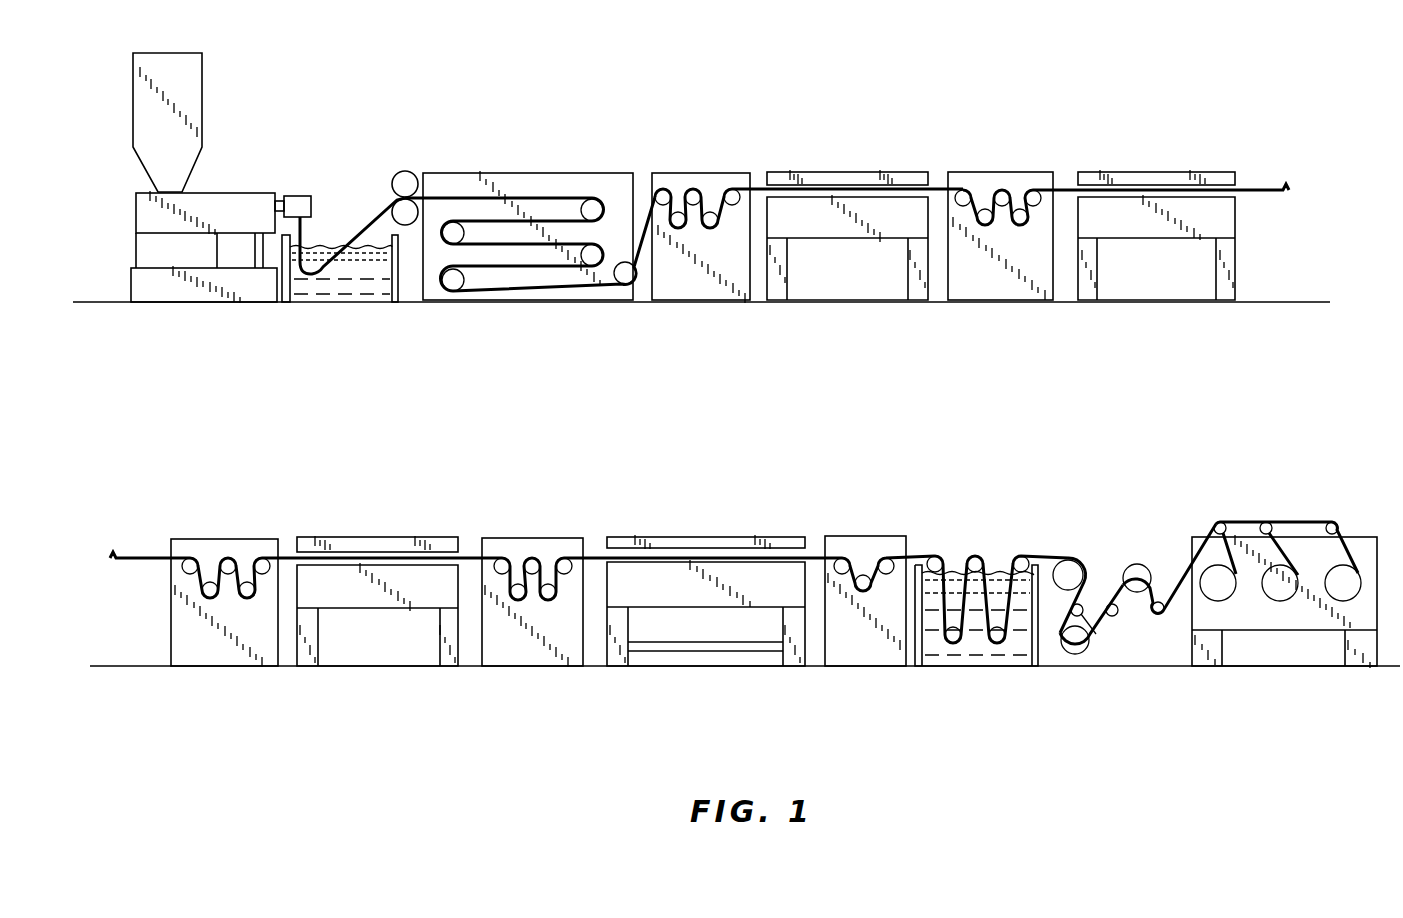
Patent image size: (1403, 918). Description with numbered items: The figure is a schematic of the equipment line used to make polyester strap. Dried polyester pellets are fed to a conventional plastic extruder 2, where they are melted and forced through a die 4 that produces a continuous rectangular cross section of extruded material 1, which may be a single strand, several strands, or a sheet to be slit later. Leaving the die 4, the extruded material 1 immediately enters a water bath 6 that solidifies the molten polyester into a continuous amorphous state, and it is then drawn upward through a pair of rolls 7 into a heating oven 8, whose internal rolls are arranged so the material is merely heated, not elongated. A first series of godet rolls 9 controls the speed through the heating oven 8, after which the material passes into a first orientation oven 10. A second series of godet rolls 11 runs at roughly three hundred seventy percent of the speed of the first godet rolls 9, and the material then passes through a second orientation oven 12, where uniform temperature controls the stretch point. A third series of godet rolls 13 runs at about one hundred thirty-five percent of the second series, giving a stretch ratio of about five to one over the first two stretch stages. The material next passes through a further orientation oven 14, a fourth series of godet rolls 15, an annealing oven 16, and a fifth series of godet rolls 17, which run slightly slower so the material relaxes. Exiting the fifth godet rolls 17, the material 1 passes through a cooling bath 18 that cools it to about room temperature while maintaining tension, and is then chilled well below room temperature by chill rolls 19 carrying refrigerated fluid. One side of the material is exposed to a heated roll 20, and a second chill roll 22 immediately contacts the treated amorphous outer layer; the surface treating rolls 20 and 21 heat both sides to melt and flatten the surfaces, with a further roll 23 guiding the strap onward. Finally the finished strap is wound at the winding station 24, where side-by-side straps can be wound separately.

The extruded material 1 is at (372, 220).
The plastic extruder 2 is at (218, 166).
The die 4 is at (300, 196).
The water bath 6 is at (356, 275).
The feed rollers 7 is at (406, 172).
The heating oven 8 is at (533, 183).
The first series of godet rolls 9 is at (680, 183).
The first orientation oven 10 is at (832, 175).
The second series of godet rolls 11 is at (987, 180).
The second orientation oven 12 is at (1133, 175).
The third series of godet rolls 13 is at (214, 548).
The further orientation oven 14 is at (360, 541).
The fourth series of godet rolls 15 is at (517, 545).
The annealing oven 16 is at (690, 542).
The fifth series of godet rolls 17 is at (852, 545).
The cooling bath 18 is at (953, 590).
The chill rolls 19 is at (1070, 576).
The heated roll 20 is at (1080, 616).
The surface treating roll 21 is at (1115, 616).
The second chill roll 22 is at (1072, 645).
The roller 23 is at (1135, 578).
The winding station 24 is at (1305, 555).